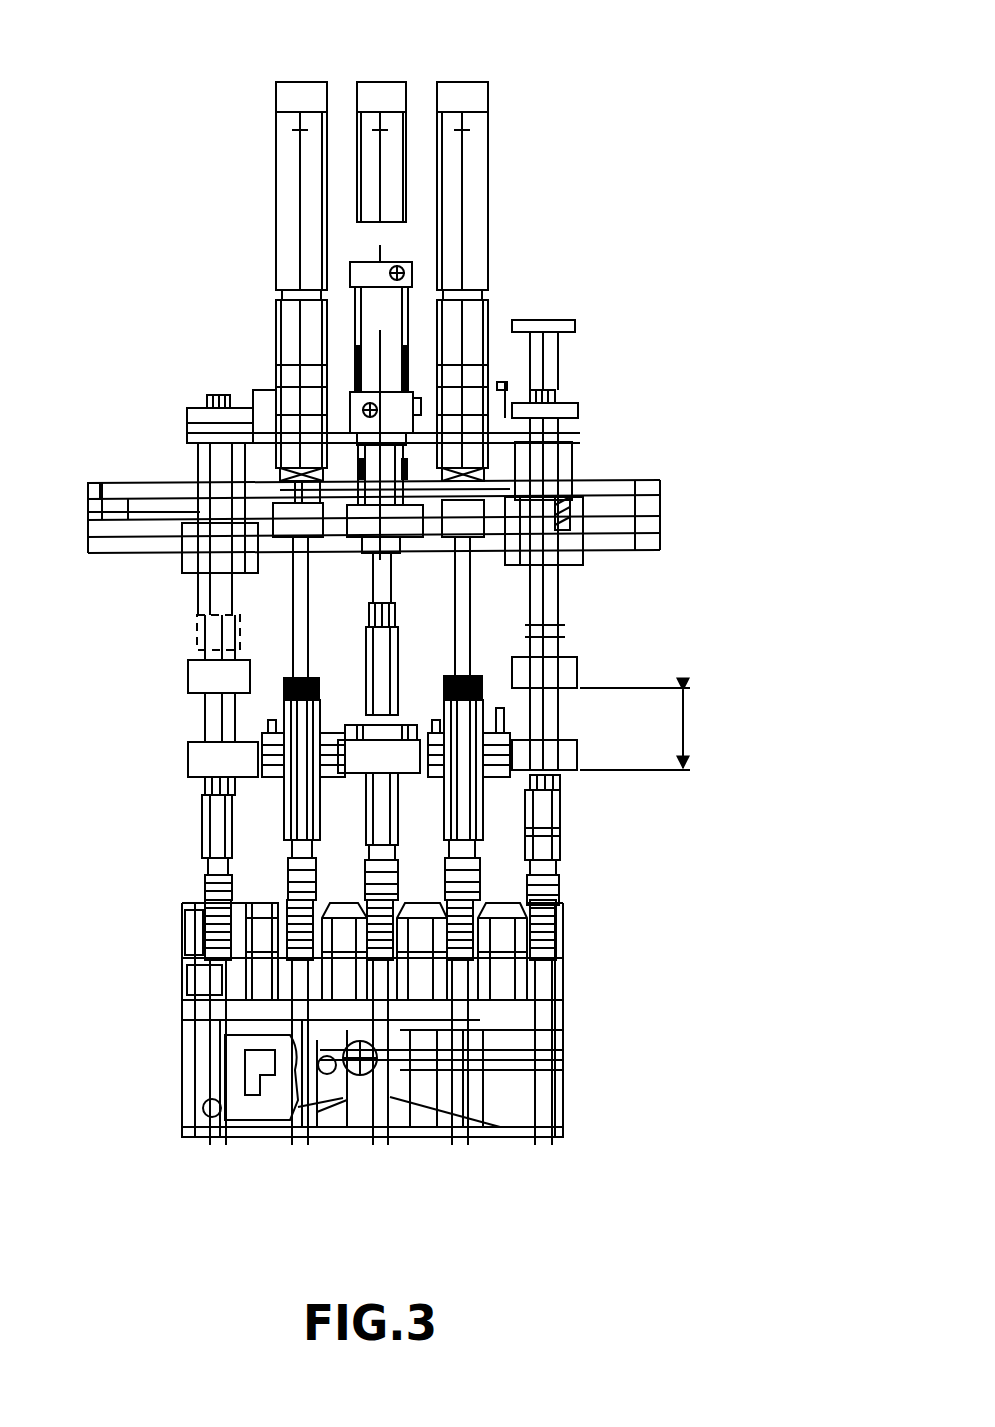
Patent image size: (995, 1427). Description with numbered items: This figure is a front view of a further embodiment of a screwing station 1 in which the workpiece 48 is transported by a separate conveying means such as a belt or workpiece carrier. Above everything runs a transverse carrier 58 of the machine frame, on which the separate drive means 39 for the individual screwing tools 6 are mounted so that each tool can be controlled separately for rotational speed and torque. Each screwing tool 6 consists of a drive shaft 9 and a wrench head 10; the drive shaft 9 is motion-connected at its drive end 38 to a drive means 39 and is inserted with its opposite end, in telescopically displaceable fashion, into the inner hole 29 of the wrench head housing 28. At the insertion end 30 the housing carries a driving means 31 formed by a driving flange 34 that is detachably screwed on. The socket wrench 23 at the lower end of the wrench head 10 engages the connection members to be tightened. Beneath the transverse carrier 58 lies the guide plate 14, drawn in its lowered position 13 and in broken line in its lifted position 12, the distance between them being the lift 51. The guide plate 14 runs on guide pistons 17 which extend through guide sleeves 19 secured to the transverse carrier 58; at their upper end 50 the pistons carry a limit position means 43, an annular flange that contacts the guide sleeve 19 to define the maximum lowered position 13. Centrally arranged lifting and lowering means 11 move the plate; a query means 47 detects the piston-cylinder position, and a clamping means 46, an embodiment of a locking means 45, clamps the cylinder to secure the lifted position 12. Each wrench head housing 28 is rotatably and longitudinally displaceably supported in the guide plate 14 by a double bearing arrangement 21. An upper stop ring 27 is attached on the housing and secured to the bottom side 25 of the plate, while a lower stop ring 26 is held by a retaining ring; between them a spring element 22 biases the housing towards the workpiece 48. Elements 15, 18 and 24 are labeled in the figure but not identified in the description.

The screwing station 1 is at (670, 80).
The screwing tool 6 is at (186, 790).
The drive shaft 9 is at (481, 662).
The wrench head 10 is at (192, 838).
The lifting and lowering means 11 is at (327, 494).
The lifted position 12 is at (153, 680).
The lowered position 13 is at (188, 760).
The guide plate 14 is at (153, 720).
The drive motor 15 is at (382, 469).
The guide piston 17 is at (552, 646).
The crosshead plate 18 is at (575, 760).
The guide sleeve 19 is at (565, 460).
The double bearing arrangement 21 is at (272, 716).
The spring element 22 is at (565, 815).
The socket wrench 23 is at (556, 898).
The seal 24 is at (556, 870).
The bottom side 25 is at (332, 790).
The lower stop ring 26 is at (205, 872).
The upper stop ring 27 is at (280, 790).
The wrench head housing 28 is at (565, 829).
The inner hole 29 is at (322, 718).
The insertion end 30 is at (565, 626).
The driving means 31 is at (331, 579).
The driving flange 34 is at (385, 529).
The drive end 38 is at (302, 517).
The drive means 39 is at (312, 94).
The limit position means 43 is at (545, 410).
The locking means 45 is at (275, 436).
The clamping means 46 is at (370, 410).
The query means 47 is at (360, 404).
The workpiece 48 is at (555, 1048).
The upper end 50 is at (608, 365).
The lift 51 is at (647, 729).
The transverse carrier 58 is at (642, 512).